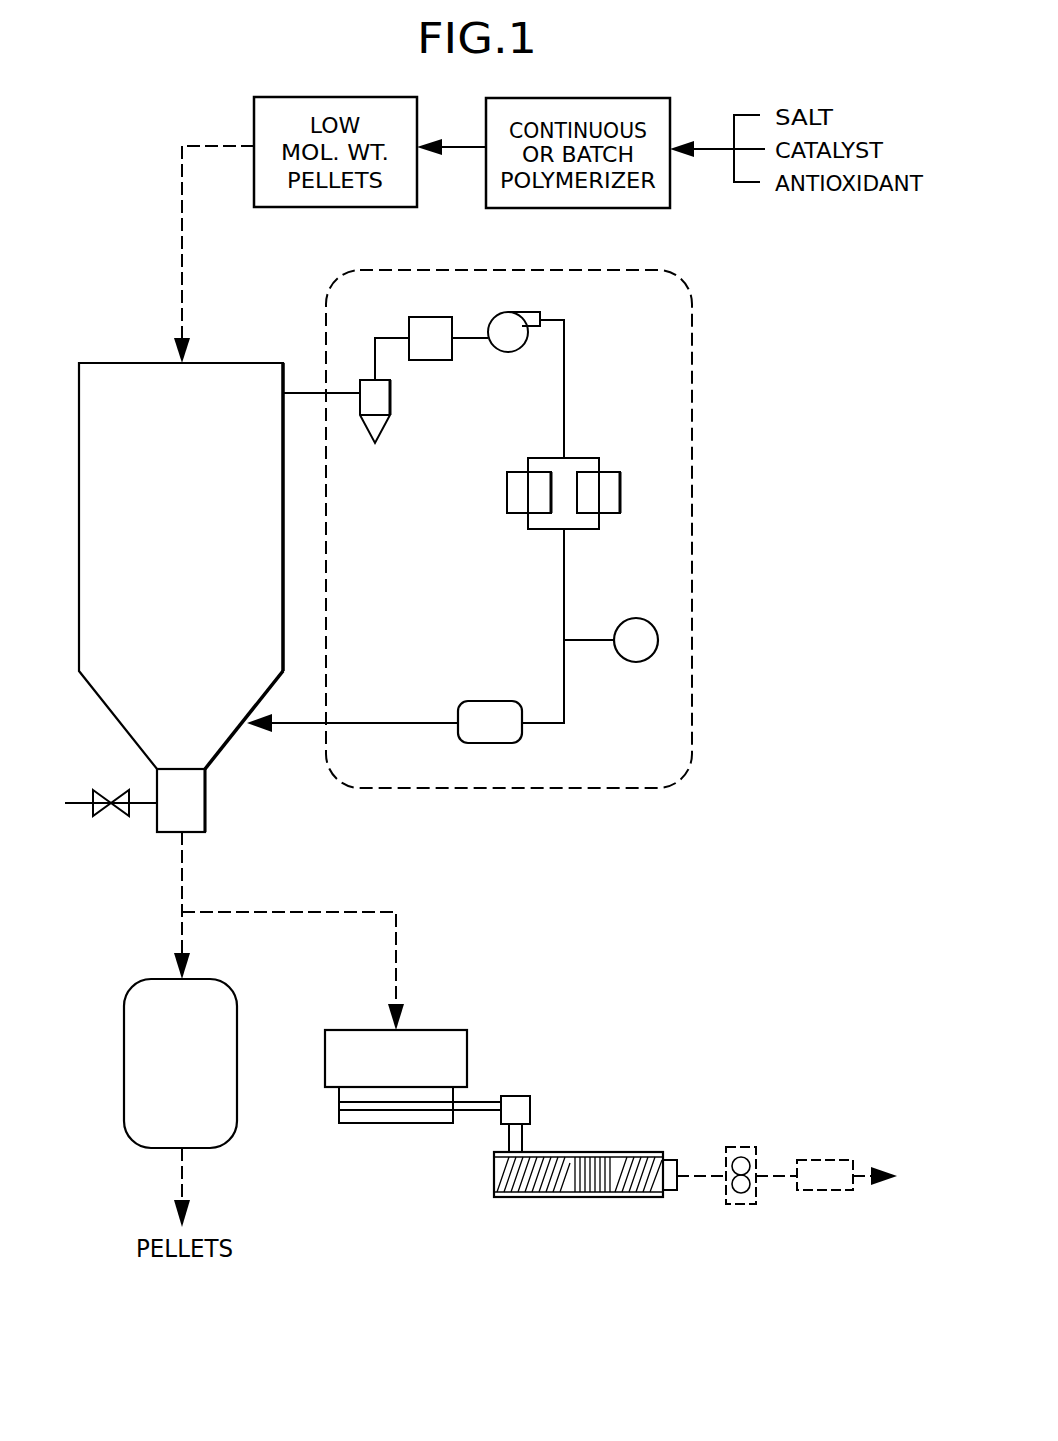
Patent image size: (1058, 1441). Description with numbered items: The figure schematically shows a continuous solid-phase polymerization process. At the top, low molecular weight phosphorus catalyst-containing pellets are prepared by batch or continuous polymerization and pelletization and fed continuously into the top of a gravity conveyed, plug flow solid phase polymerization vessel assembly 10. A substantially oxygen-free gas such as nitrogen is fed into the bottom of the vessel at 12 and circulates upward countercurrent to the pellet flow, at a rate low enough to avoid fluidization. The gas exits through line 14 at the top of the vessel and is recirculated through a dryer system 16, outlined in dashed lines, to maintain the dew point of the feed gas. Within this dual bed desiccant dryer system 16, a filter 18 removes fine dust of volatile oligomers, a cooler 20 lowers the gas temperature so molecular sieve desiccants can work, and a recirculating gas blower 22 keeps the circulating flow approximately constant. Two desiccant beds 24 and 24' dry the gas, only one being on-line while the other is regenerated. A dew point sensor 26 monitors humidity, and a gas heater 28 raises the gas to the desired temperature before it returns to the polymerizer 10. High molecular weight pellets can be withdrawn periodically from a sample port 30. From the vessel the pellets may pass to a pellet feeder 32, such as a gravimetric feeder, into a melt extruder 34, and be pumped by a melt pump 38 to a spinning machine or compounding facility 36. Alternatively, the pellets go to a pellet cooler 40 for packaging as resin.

The solid phase polymerization vessel assembly 10 is at (168, 533).
The gas inlet at bottom of vessel 12 is at (312, 728).
The gas exit line 14 is at (306, 391).
The dryer system 16 is at (694, 500).
The filter 18 is at (366, 379).
The cooler 20 is at (426, 316).
The recirculating gas blower 22 is at (516, 312).
The desiccant bed 24 is at (531, 490).
The desiccant bed 24' is at (623, 481).
The dew point sensor 26 is at (635, 618).
The gas heater 28 is at (505, 744).
The sample port 30 is at (126, 820).
The pellet feeder 32 is at (381, 1075).
The melt extruder 34 is at (597, 1151).
The spinning machine or compounding facility 36 is at (822, 1159).
The melt pump 38 is at (737, 1146).
The pellet cooler 40 is at (166, 1081).